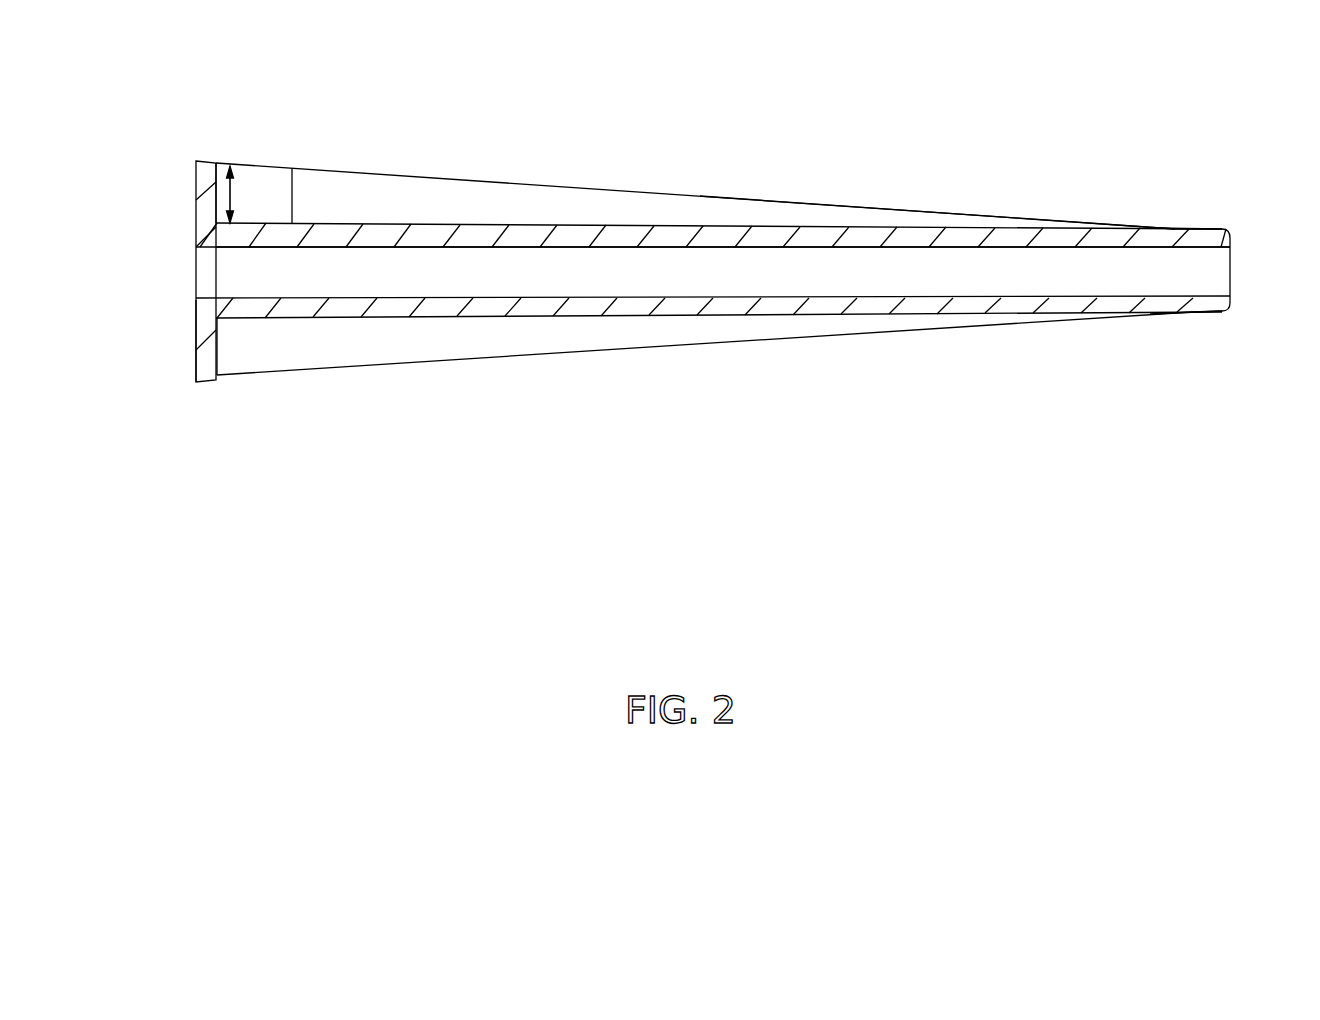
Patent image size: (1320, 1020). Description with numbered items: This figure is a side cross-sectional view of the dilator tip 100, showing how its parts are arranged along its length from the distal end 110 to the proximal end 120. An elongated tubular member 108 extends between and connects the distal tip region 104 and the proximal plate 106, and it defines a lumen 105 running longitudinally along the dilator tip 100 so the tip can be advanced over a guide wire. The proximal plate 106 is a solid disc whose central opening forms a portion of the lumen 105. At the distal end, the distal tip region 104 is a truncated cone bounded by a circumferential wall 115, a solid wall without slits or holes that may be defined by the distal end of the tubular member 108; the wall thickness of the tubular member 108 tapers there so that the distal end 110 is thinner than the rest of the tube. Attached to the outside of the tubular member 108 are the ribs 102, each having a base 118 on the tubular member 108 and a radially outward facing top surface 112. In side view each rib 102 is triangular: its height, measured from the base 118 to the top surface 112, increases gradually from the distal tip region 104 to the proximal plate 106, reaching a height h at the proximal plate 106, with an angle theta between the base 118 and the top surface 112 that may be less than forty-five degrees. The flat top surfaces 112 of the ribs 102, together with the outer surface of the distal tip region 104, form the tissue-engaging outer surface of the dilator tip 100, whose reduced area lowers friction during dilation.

The dilator tip 100 is at (980, 82).
The rib 102 is at (266, 180).
The distal tip region 104 is at (1162, 247).
The lumen 105 is at (948, 273).
The proximal plate 106 is at (196, 342).
The elongated tubular member 108 is at (600, 307).
The distal end 110 is at (1228, 245).
The top surface 112 is at (830, 205).
The circumferential wall 115 is at (1177, 315).
The base 118 is at (673, 226).
The proximal end 120 is at (196, 205).